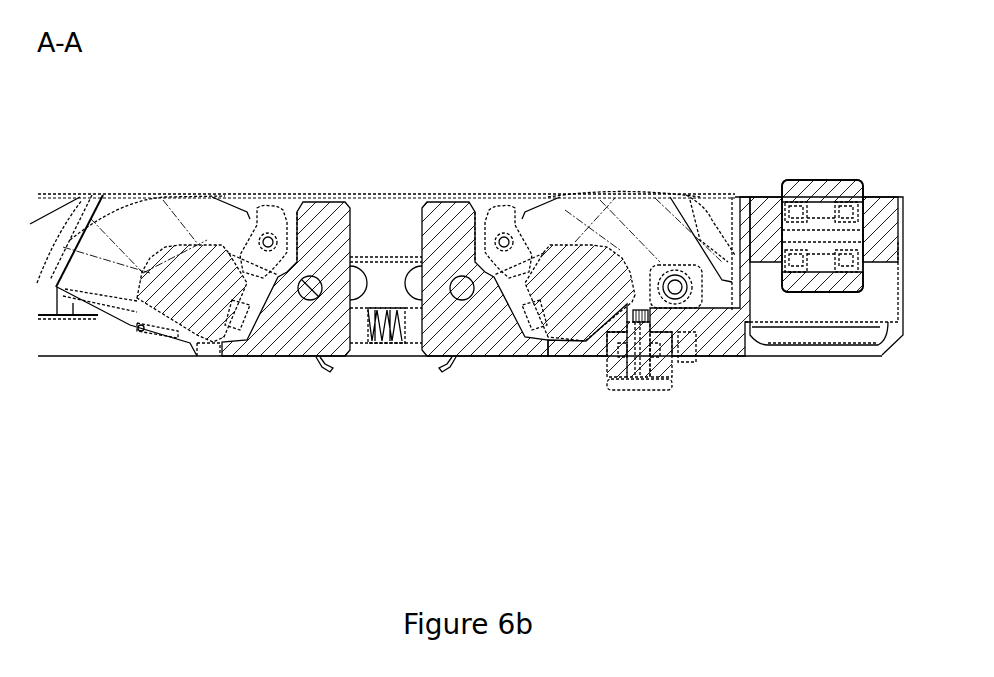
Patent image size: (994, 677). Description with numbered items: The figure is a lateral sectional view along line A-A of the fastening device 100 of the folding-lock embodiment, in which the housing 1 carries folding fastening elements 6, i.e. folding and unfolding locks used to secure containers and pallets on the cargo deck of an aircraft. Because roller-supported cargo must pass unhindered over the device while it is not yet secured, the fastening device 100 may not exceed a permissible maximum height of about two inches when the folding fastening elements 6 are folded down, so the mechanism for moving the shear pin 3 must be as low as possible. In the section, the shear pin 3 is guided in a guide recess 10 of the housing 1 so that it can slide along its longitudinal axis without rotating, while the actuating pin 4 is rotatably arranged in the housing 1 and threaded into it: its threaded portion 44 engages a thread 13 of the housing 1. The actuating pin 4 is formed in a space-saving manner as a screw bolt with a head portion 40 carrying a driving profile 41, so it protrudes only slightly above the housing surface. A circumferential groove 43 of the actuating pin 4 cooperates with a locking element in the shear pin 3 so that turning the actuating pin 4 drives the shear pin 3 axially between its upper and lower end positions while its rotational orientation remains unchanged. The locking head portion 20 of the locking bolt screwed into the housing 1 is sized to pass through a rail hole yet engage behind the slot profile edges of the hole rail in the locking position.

The fastening device 100 is at (456, 282).
The folding fastening element 6 is at (558, 252).
The head portion 40 is at (632, 310).
The driving profile 41 is at (638, 312).
The threaded portion 44 is at (627, 317).
The shear pin 3 is at (610, 362).
The circumferential groove 43 is at (618, 383).
The actuating pin 4 is at (634, 378).
The locking head portion 20 is at (665, 378).
The thread 13 is at (656, 340).
The guide recess 10 is at (672, 347).
The housing 1 is at (750, 345).